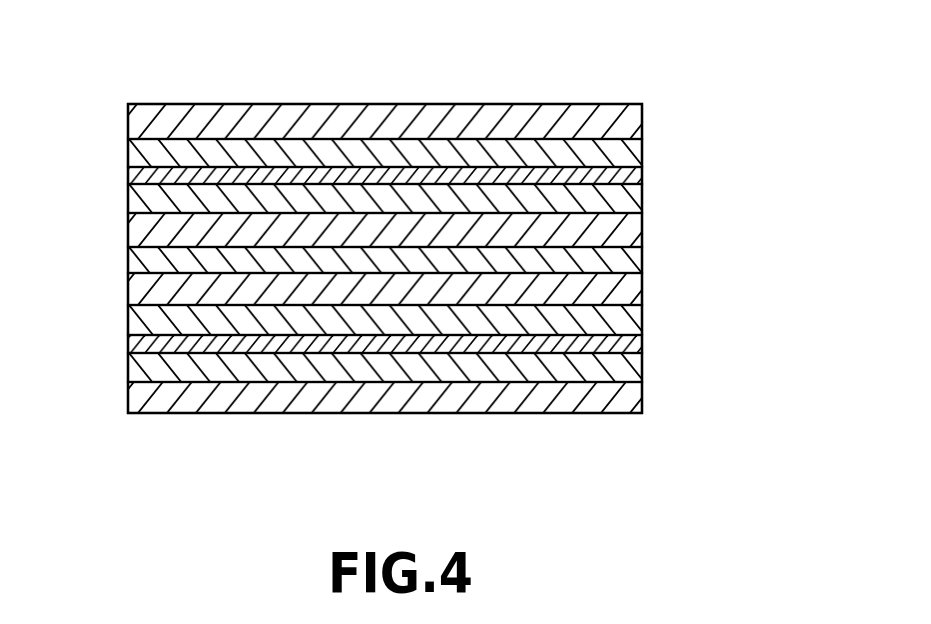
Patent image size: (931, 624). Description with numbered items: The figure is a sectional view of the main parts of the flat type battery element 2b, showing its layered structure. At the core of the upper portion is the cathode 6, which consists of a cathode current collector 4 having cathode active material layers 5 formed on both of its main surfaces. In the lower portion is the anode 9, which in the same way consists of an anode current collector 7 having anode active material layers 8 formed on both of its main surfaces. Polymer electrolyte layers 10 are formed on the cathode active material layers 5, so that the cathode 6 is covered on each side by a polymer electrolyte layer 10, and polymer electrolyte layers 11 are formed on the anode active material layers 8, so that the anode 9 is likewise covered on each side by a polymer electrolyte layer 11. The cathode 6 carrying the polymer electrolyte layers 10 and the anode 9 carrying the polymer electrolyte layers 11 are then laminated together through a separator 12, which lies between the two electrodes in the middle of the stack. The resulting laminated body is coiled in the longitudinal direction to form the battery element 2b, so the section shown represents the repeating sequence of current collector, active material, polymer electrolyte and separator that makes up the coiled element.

The battery element 2b is at (603, 62).
The cathode current collector 4 is at (642, 169).
The cathode active material layers 5 is at (635, 143).
The cathode 6 is at (454, 170).
The anode current collector 7 is at (642, 338).
The anode active material layers 8 is at (634, 311).
The anode 9 is at (453, 337).
The polymer electrolyte layers 10 is at (128, 125).
The polymer electrolyte layers 11 is at (128, 293).
The separator 12 is at (128, 264).